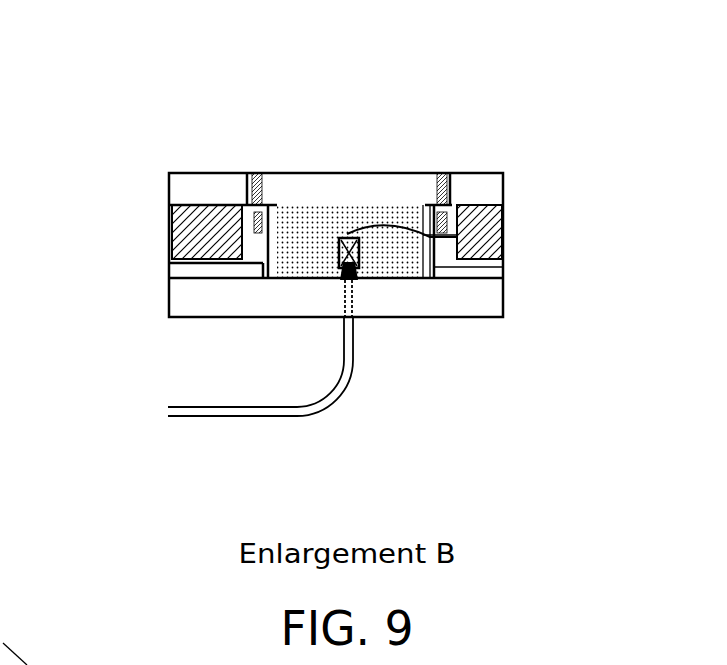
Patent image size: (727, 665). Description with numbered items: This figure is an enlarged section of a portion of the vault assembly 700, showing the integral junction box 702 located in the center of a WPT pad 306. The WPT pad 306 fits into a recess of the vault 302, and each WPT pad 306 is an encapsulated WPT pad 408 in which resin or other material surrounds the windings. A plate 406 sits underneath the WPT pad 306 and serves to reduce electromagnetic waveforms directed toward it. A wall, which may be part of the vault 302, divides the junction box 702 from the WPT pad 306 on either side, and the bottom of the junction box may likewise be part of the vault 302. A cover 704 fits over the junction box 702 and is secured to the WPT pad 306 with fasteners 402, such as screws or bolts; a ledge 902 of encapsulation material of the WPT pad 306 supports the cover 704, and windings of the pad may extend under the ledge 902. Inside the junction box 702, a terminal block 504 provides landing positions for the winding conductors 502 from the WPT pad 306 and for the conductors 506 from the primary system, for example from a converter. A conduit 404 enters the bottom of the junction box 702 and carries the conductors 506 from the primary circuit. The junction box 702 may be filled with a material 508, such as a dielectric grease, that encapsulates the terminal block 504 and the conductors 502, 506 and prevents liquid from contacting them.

The vault assembly 700 is at (120, 42).
The vault 302 is at (238, 317).
The WPT pad 306 is at (219, 205).
The fasteners 402 is at (258, 173).
The conduit 404 is at (283, 416).
The plate 406 is at (495, 278).
The encapsulated WPT pad 408 is at (177, 173).
The winding conductors 502 is at (424, 176).
The terminal block 504 is at (362, 269).
The conductors 506 is at (341, 270).
The material 508 is at (396, 248).
The junction box 702 is at (337, 204).
The cover 704 is at (397, 229).
The ledge 902 is at (244, 222).